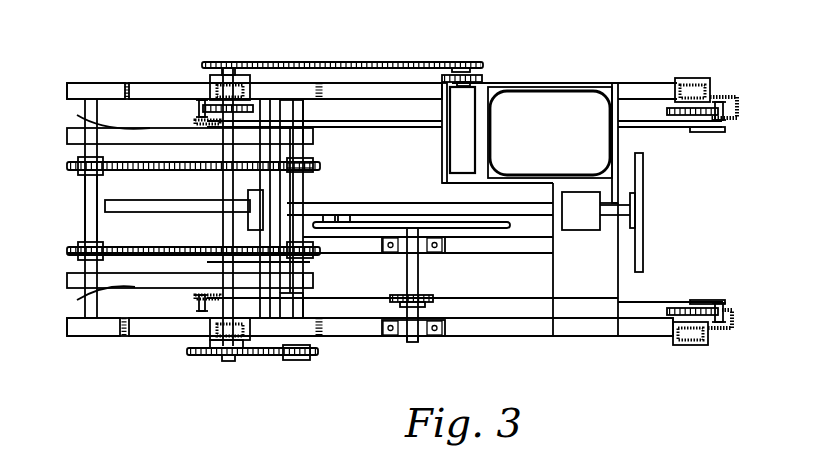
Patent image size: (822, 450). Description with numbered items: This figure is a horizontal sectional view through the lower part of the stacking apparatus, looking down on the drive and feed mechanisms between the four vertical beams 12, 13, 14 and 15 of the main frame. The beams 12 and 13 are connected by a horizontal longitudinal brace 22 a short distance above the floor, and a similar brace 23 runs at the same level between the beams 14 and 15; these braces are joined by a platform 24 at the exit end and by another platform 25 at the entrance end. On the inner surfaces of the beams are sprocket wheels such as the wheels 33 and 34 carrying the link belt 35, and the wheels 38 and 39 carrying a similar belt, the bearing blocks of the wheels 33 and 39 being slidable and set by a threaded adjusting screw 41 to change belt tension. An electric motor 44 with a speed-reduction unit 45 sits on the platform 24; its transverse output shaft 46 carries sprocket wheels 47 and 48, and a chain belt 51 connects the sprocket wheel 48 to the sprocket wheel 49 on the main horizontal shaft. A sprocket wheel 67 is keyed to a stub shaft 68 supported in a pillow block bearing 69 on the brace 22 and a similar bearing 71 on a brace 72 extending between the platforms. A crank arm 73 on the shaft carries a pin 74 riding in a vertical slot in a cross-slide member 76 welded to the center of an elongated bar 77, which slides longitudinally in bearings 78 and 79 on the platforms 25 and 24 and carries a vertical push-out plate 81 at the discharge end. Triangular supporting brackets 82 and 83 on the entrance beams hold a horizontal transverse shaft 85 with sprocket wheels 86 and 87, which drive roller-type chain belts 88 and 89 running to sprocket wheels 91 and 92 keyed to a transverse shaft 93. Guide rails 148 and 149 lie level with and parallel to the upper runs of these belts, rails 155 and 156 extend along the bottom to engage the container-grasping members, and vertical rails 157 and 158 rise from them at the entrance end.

The vertical beam 12 is at (215, 332).
The vertical beam 13 is at (708, 335).
The vertical beam 14 is at (712, 90).
The vertical beam 15 is at (215, 90).
The horizontal longitudinal brace 22 is at (370, 340).
The longitudinal brace 23 is at (395, 90).
The platform 24 is at (560, 338).
The platform 25 is at (225, 263).
The sprocket wheel 33 is at (245, 347).
The sprocket wheel 34 is at (690, 308).
The link belt 35 is at (200, 310).
The sprocket wheel 38 is at (672, 118).
The sprocket wheel 39 is at (250, 100).
The threaded adjusting screw 41 is at (197, 107).
The electric motor 44 is at (570, 105).
The speed-reduction unit 45 is at (455, 140).
The transverse output shaft 46 is at (470, 75).
The sprocket wheel 47 is at (480, 82).
The sprocket wheel 48 is at (462, 66).
The sprocket wheel 49 is at (228, 62).
The chain belt 51 is at (348, 62).
The sprocket wheel 67 is at (432, 308).
The stub shaft 68 is at (420, 275).
The pillow block bearing 69 is at (405, 340).
The pillow block bearing 71 is at (405, 250).
The brace 72 is at (523, 248).
The crank arm 73 is at (400, 222).
The pin 74 is at (329, 215).
The cross-slide member 76 is at (348, 216).
The elongated bar 77 is at (505, 211).
The bearing 78 is at (250, 225).
The bearing 79 is at (578, 232).
The push-out plate 81 is at (645, 245).
The triangular supporting bracket 82 is at (100, 336).
The triangular supporting bracket 83 is at (113, 86).
The horizontal transverse shaft 85 is at (86, 203).
The sprocket wheel 86 is at (80, 170).
The sprocket wheel 87 is at (80, 246).
The chain belt 88 is at (146, 170).
The chain belt 89 is at (150, 249).
The sprocket wheel 91 is at (315, 165).
The sprocket wheel 92 is at (312, 258).
The transverse shaft 93 is at (300, 112).
The guide rail 148 is at (67, 136).
The guide rail 149 is at (67, 276).
The rail 155 is at (698, 133).
The rail 156 is at (720, 300).
The vertical rail 157 is at (202, 125).
The vertical rail 158 is at (200, 298).